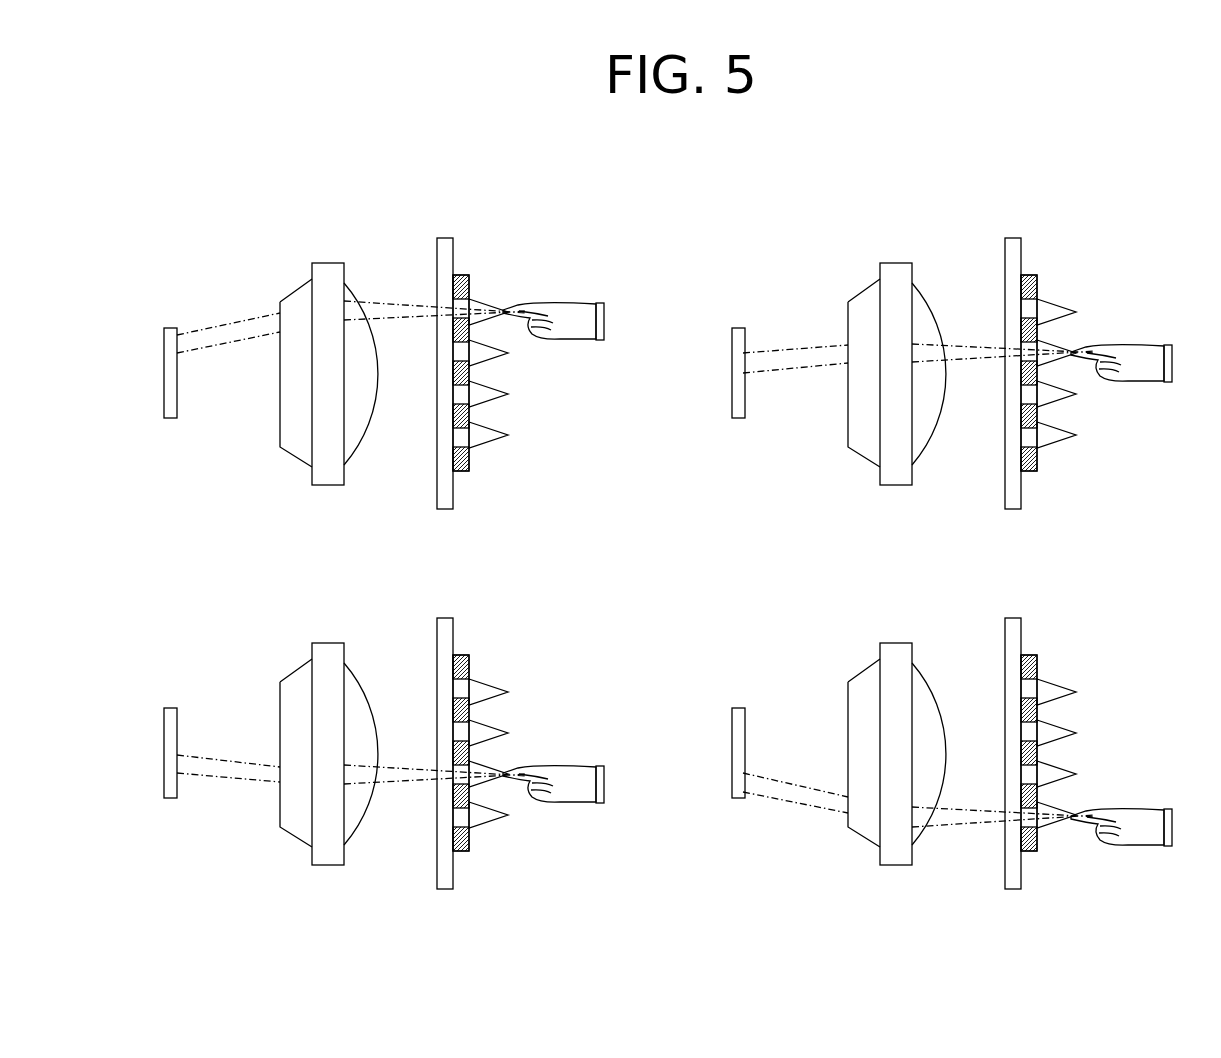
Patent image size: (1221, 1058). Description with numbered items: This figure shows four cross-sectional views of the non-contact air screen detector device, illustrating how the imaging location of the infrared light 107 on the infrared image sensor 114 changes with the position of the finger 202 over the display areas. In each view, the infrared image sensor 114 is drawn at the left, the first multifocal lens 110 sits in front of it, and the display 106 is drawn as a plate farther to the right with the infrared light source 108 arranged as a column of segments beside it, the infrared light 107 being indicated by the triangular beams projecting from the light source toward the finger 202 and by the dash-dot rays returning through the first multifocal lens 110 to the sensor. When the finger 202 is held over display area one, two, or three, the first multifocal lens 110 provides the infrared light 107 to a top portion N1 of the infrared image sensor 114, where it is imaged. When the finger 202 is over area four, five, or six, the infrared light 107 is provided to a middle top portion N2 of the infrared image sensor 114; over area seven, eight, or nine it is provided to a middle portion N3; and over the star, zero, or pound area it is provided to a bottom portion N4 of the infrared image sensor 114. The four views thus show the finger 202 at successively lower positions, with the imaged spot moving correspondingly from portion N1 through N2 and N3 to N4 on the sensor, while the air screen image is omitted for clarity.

The infrared image sensor 114 is at (447, 604).
The first multifocal lens 110 is at (613, 605).
The display 106 is at (730, 593).
The infrared light source 108 is at (767, 611).
The infrared light 107 is at (958, 918).
The finger 202 is at (561, 301).
The top portion of the infrared image sensor N1 is at (157, 372).
The middle top portion of the infrared image sensor N2 is at (725, 373).
The middle portion of the infrared image sensor N3 is at (157, 753).
The bottom portion of the infrared image sensor N4 is at (725, 753).